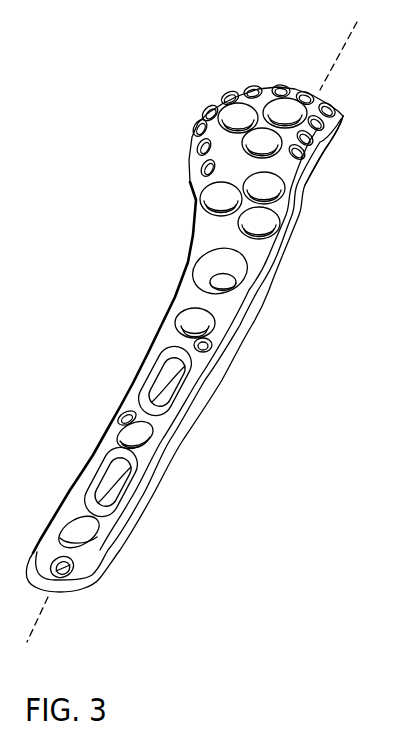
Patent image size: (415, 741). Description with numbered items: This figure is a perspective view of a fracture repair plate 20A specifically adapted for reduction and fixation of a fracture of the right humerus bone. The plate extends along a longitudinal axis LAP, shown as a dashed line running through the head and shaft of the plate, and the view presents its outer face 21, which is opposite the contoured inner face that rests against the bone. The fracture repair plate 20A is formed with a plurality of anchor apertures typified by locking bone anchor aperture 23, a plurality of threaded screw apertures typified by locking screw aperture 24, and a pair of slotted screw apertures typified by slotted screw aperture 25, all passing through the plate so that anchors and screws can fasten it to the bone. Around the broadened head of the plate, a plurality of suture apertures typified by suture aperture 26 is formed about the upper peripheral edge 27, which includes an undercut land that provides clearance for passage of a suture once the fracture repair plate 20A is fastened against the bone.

The fracture repair plate 20A is at (268, 292).
The outer face 21 is at (183, 297).
The locking bone anchor aperture 23 is at (205, 203).
The locking screw aperture 24 is at (117, 437).
The slotted screw aperture 25 is at (147, 385).
The suture aperture 26 is at (313, 153).
The upper peripheral edge 27 is at (343, 112).
The longitudinal axis LAP is at (337, 60).